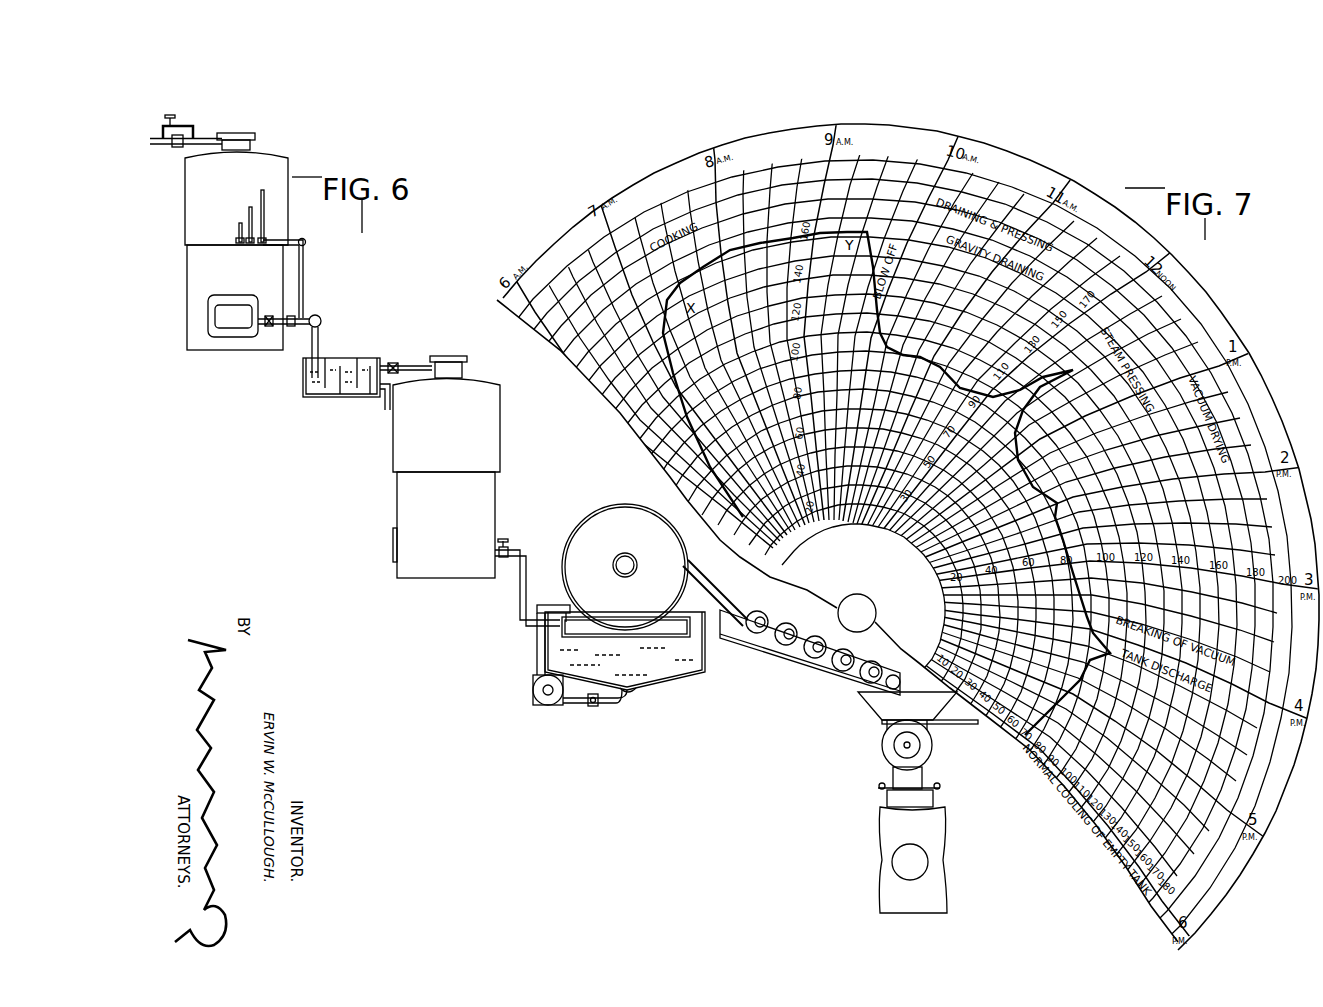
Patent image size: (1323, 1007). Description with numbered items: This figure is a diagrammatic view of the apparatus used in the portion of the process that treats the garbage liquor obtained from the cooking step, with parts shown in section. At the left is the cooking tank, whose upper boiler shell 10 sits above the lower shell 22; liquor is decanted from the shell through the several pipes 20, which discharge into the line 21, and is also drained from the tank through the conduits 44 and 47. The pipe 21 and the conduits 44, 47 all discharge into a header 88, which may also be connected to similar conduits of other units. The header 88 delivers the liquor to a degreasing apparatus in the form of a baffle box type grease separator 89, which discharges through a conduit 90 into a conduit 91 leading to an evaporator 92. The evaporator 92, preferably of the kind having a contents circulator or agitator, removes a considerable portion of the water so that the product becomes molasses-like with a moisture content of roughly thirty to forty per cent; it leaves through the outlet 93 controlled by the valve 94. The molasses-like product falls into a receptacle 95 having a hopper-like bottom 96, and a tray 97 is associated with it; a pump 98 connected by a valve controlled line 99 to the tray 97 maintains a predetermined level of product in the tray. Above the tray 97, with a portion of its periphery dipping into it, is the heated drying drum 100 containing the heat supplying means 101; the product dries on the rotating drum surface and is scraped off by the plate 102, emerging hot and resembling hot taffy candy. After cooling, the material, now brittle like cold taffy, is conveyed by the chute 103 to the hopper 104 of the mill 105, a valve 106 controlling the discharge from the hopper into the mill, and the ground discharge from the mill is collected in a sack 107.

The boiler shell 10 is at (200, 215).
The pipe 20 is at (266, 228).
The pipe 21 is at (305, 283).
The shell 22 is at (192, 320).
The conduit 44 is at (278, 328).
The conduit 47 is at (290, 328).
The header 88 is at (322, 320).
The baffle box type grease separator 89 is at (342, 390).
The conduit 90 is at (386, 405).
The conduit 91 is at (418, 366).
The evaporator 92 is at (490, 447).
The outlet 93 is at (523, 588).
The valve 94 is at (510, 548).
The receptacle 95 is at (692, 662).
The hopper-like bottom 96 is at (648, 690).
The tray 97 is at (610, 640).
The pump 98 is at (535, 703).
The valve controlled line 99 is at (606, 706).
The heated drying drum 100 is at (590, 532).
The heat supplying means 101 is at (638, 563).
The plate 102 is at (700, 582).
The chute 103 is at (773, 655).
The hopper 104 is at (880, 700).
The mill 105 is at (930, 752).
The valve 106 is at (958, 724).
The sack 107 is at (880, 848).